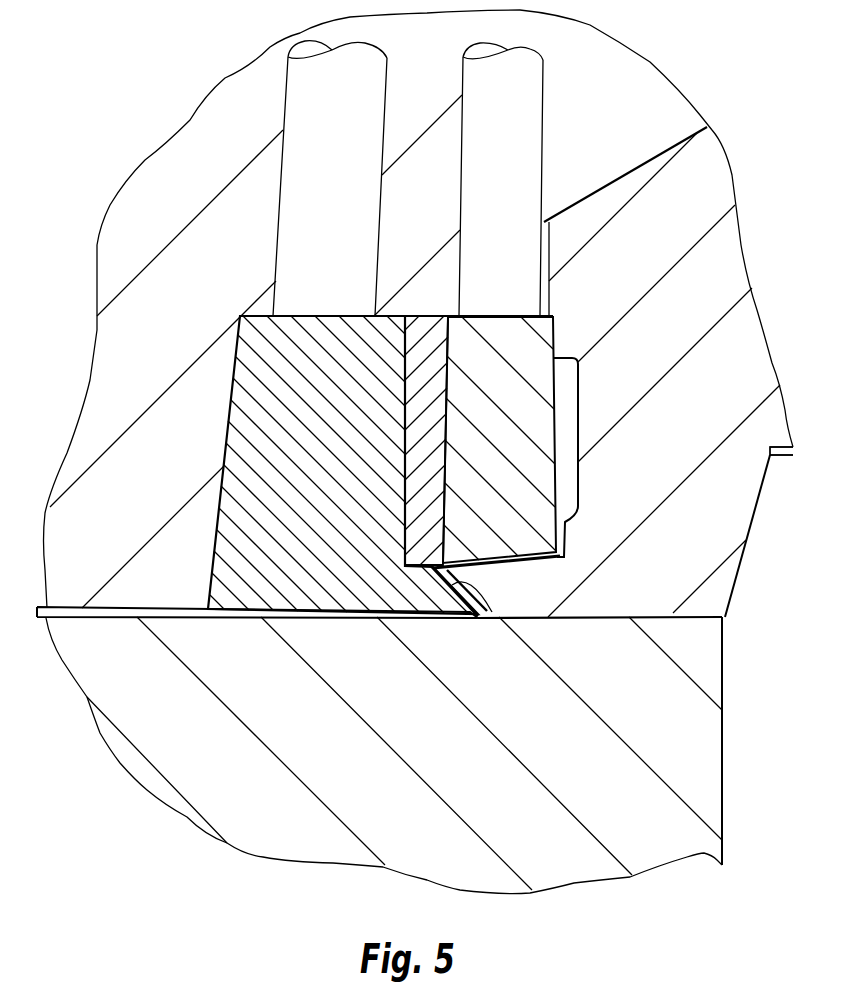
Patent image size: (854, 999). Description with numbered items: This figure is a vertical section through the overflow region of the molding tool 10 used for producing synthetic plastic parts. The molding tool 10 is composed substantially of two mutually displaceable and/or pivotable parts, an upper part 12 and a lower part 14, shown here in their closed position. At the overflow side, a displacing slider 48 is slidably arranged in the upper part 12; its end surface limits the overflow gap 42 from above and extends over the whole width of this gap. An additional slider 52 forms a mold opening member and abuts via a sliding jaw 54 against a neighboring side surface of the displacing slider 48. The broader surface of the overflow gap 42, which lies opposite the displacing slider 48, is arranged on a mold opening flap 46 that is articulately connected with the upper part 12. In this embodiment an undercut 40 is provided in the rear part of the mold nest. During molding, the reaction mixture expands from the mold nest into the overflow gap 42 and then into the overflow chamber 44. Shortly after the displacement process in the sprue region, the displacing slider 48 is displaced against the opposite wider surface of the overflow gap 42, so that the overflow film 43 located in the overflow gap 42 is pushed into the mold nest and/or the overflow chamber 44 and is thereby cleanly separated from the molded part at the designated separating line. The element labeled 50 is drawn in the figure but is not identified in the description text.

The molding tool 10 is at (148, 762).
The upper part 12 is at (235, 148).
The lower part 14 is at (218, 797).
The undercut 40 is at (500, 598).
The overflow gap 42 is at (535, 565).
The overflow film 43 is at (503, 568).
The overflow chamber 44 is at (565, 525).
The mold opening flap 46 is at (786, 430).
The displacing slider 48 is at (530, 377).
The contact pins 50 is at (507, 157).
The additional slider 52 is at (273, 408).
The sliding jaw 54 is at (437, 540).